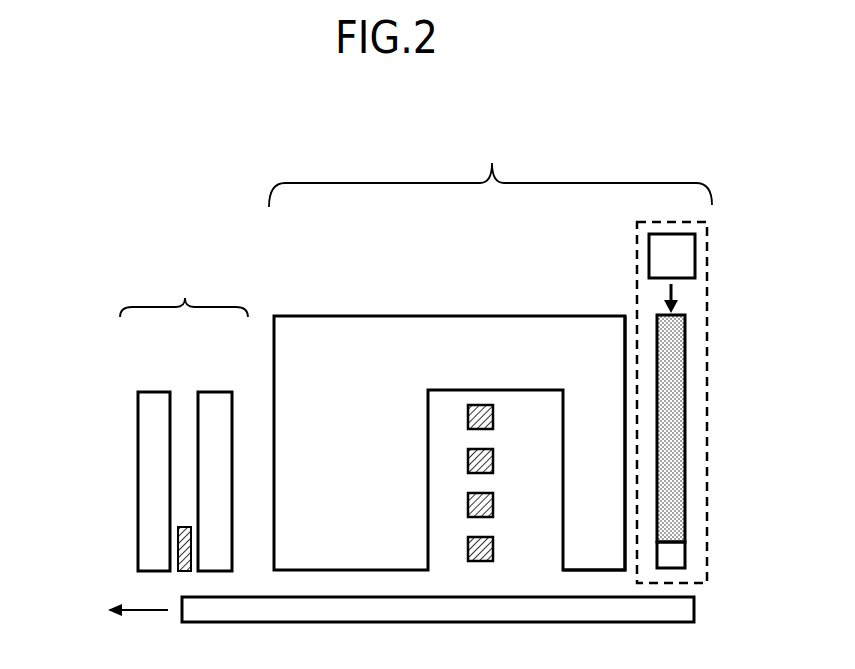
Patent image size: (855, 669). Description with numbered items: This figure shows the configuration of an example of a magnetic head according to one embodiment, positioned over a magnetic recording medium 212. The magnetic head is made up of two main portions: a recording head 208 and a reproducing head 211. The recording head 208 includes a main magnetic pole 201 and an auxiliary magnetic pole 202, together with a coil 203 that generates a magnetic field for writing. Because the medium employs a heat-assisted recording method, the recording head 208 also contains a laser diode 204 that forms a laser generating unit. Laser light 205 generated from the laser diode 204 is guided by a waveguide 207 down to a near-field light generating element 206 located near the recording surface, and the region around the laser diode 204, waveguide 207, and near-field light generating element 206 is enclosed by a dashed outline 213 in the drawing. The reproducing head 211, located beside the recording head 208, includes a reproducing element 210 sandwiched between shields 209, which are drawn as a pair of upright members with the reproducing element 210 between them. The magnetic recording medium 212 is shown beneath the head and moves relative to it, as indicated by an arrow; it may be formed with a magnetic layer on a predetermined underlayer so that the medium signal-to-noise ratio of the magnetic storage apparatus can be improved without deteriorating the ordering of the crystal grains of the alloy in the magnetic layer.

The main magnetic pole 201 is at (593, 515).
The auxiliary magnetic pole 202 is at (390, 488).
The coil 203 is at (495, 412).
The laser diode 204 is at (684, 253).
The laser light 205 is at (676, 290).
The near-field light generating element 206 is at (679, 556).
The waveguide 207 is at (670, 348).
The recording head 208 is at (490, 171).
The shields 209 is at (212, 400).
The reproducing element 210 is at (178, 550).
The reproducing head 211 is at (184, 292).
The magnetic recording medium 212 is at (686, 612).
The measurement unit 213 is at (636, 250).